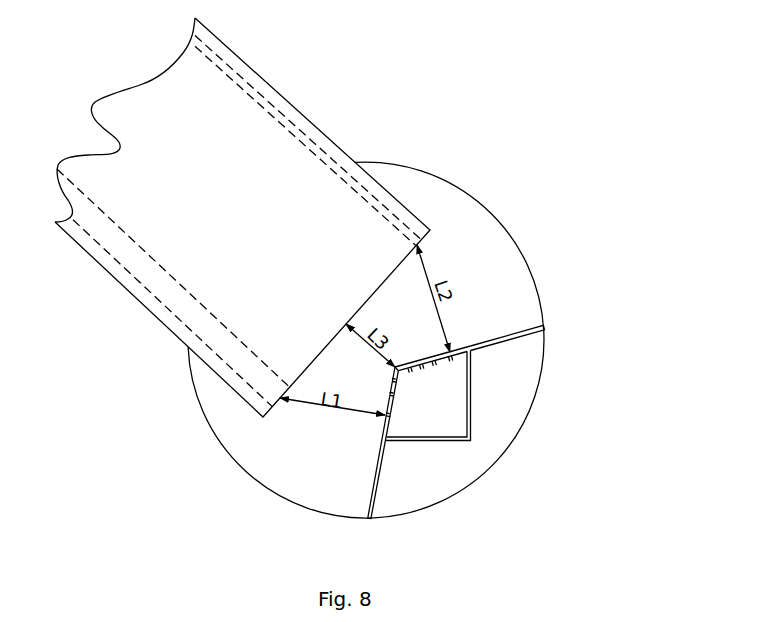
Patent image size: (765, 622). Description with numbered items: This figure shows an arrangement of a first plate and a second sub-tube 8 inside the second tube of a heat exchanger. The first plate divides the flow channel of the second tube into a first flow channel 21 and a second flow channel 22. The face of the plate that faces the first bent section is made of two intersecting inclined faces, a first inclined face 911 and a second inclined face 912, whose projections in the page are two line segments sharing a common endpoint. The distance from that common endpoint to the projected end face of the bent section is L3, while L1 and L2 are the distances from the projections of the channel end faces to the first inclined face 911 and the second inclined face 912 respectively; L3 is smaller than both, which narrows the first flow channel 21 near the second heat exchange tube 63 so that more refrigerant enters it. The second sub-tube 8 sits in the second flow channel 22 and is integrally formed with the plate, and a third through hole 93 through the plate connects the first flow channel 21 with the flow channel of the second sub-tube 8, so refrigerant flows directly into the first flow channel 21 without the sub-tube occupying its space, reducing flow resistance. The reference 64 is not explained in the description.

The upper layer of strip 64 is at (292, 128).
The second heat exchange tube 63 is at (145, 285).
The first flow channel 21 is at (470, 233).
The second flow channel 22 is at (532, 343).
The second inclined face 912 is at (503, 333).
The first inclined face 911 is at (373, 477).
The second sub-tube 8 is at (470, 425).
The third through hole 93 is at (394, 390).